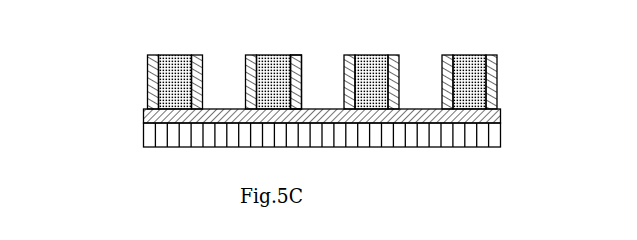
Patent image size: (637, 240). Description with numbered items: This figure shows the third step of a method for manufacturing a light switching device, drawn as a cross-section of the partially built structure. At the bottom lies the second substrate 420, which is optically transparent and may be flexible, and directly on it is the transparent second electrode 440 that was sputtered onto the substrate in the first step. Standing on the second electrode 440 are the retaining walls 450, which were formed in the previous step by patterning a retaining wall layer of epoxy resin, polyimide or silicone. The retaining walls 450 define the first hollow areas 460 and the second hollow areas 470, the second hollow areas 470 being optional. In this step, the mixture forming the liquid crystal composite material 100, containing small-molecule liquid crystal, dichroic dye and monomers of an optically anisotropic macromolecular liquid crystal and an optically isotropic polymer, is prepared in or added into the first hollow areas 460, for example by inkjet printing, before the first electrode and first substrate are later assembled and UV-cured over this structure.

The liquid crystal composite material 100 is at (373, 75).
The second substrate 420 is at (155, 133).
The second electrode 440 is at (144, 117).
The retaining walls 450 is at (198, 66).
The first hollow areas 460 is at (254, 70).
The second hollow areas 470 is at (300, 78).